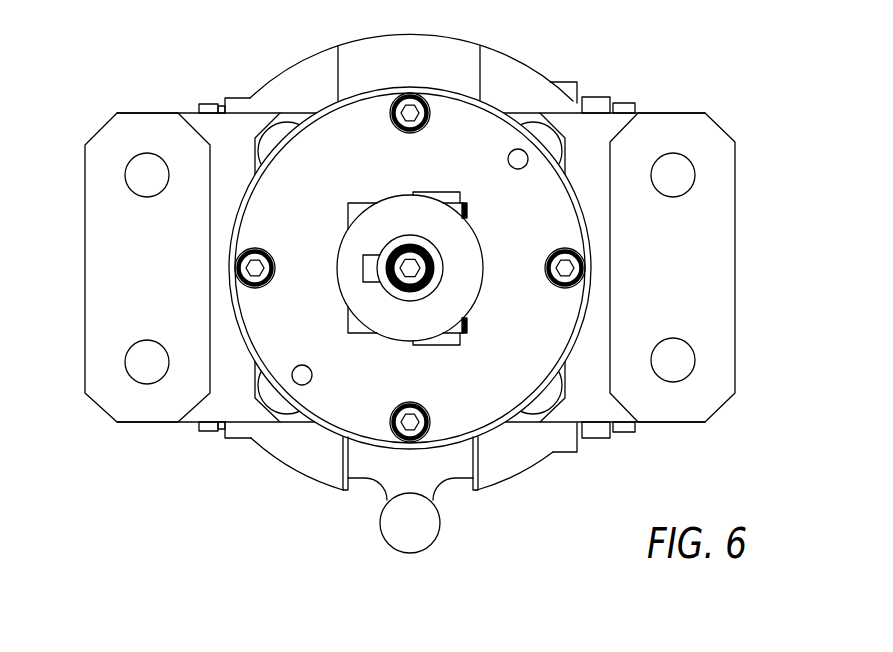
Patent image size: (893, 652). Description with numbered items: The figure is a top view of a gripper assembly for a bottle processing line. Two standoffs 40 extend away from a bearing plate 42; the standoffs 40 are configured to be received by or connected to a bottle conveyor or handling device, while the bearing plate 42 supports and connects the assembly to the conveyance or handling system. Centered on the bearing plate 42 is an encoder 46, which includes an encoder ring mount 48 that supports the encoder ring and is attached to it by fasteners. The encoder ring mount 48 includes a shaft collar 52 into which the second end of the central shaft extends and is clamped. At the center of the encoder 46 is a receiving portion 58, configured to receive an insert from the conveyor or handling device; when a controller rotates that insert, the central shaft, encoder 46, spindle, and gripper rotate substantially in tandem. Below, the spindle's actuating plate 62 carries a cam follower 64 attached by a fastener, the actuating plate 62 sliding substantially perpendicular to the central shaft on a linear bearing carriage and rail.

The standoff 40 is at (130, 105).
The bearing plate 42 is at (200, 430).
The encoder 46 is at (325, 115).
The encoder ring mount 48 is at (493, 368).
The shaft collar 52 is at (382, 200).
The receiving portion 58 is at (418, 227).
The actuating plate 62 is at (352, 500).
The cam follower 64 is at (400, 568).